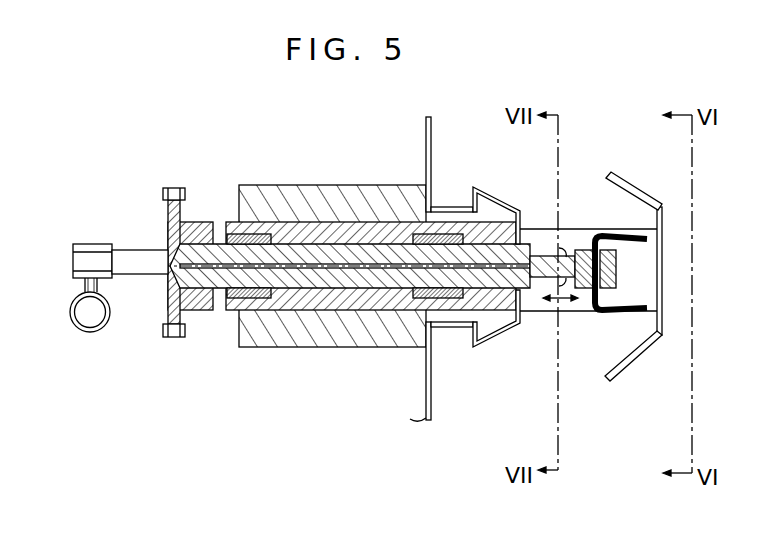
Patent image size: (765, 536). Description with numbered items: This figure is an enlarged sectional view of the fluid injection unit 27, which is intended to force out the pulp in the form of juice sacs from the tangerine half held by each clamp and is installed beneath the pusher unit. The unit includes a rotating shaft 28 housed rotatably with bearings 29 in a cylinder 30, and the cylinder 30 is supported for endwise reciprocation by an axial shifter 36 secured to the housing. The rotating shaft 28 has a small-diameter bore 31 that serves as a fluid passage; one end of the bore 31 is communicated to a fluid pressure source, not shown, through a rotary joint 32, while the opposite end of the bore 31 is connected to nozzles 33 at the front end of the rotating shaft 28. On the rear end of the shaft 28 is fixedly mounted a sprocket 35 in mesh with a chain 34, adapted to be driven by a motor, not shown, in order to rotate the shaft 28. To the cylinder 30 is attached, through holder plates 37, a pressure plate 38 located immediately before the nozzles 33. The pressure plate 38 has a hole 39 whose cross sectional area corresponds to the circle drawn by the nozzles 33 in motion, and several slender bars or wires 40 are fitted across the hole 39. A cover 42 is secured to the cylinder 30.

The fluid injection unit 27 is at (296, 417).
The rotating shaft 28 is at (533, 290).
The bearings 29 is at (248, 300).
The cylinder 30 is at (352, 312).
The small-diameter bore 31 is at (298, 280).
The rotary joint 32 is at (73, 262).
The nozzles 33 is at (662, 246).
The chain 34 is at (176, 338).
The sprocket 35 is at (172, 222).
The axial shifter 36 is at (306, 200).
The holder plates 37 is at (538, 232).
The pressure plate 38 is at (640, 193).
The hole 39 is at (660, 327).
The slender bars or wires 40 is at (663, 270).
The cover 42 is at (492, 340).